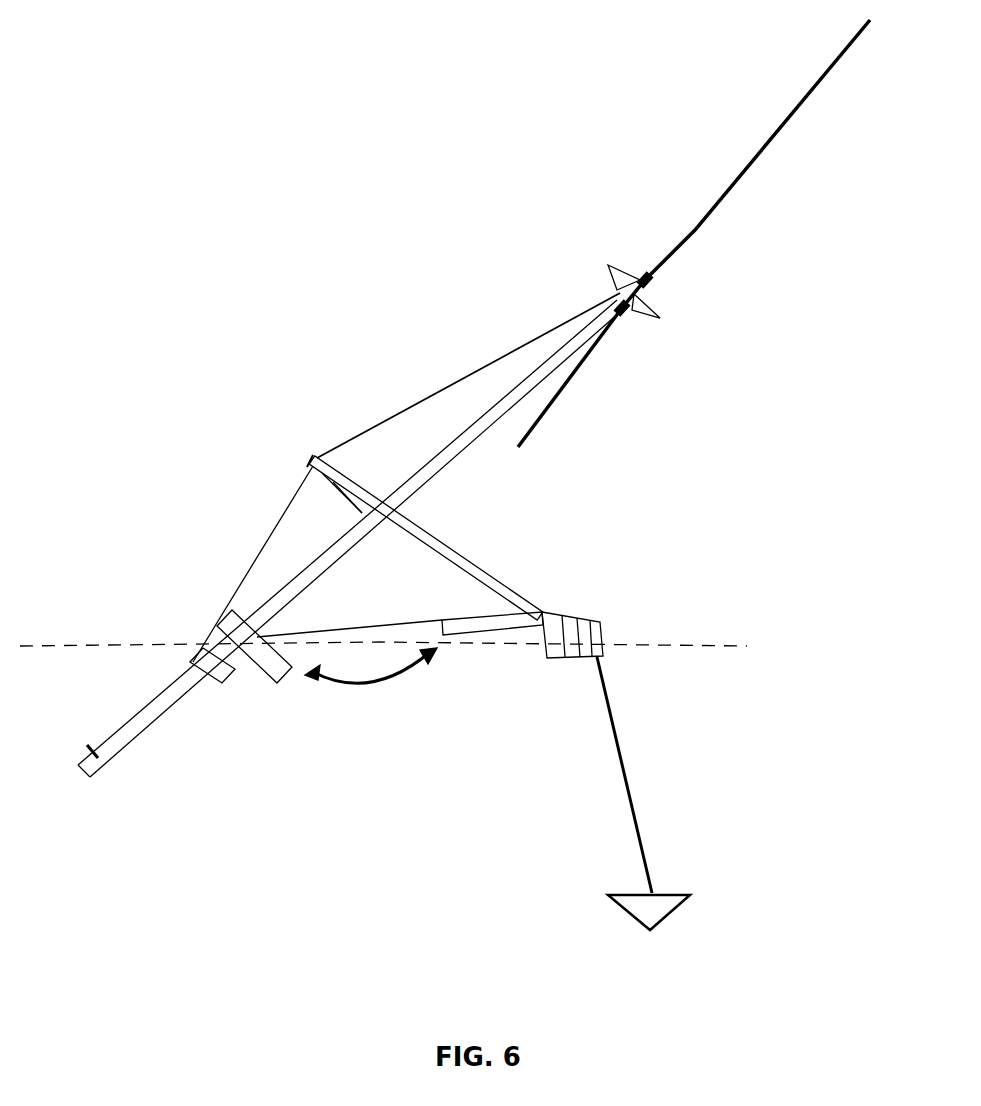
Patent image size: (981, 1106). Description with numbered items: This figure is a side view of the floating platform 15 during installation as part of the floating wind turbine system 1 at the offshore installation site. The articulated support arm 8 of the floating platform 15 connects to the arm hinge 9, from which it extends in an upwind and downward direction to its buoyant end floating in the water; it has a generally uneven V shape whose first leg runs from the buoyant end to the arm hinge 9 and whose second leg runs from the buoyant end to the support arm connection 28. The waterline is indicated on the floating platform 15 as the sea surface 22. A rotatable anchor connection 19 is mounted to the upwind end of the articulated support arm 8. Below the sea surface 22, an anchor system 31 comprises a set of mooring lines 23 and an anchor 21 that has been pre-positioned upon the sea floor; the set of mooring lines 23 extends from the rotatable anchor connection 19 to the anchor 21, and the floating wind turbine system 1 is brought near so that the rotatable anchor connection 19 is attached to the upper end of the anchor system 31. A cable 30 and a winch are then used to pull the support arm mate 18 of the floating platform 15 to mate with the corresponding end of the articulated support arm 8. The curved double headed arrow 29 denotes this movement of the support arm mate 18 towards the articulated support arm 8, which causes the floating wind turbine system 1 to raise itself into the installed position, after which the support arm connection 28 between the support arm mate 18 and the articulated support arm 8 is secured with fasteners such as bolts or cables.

The floating wind turbine system 1 is at (570, 162).
The floating platform 15 is at (284, 294).
The articulated support arm 8 is at (538, 583).
The arm hinge 9 is at (295, 453).
The support arm mate 18 is at (263, 672).
The rotatable anchor connection 19 is at (612, 633).
The anchor 21 is at (715, 903).
The sea surface 22 is at (53, 637).
The set of mooring lines 23 is at (648, 827).
The support arm connection 28 is at (442, 612).
The curved double headed arrow 29 is at (377, 698).
The cable 30 is at (380, 613).
The anchor system 31 is at (790, 714).